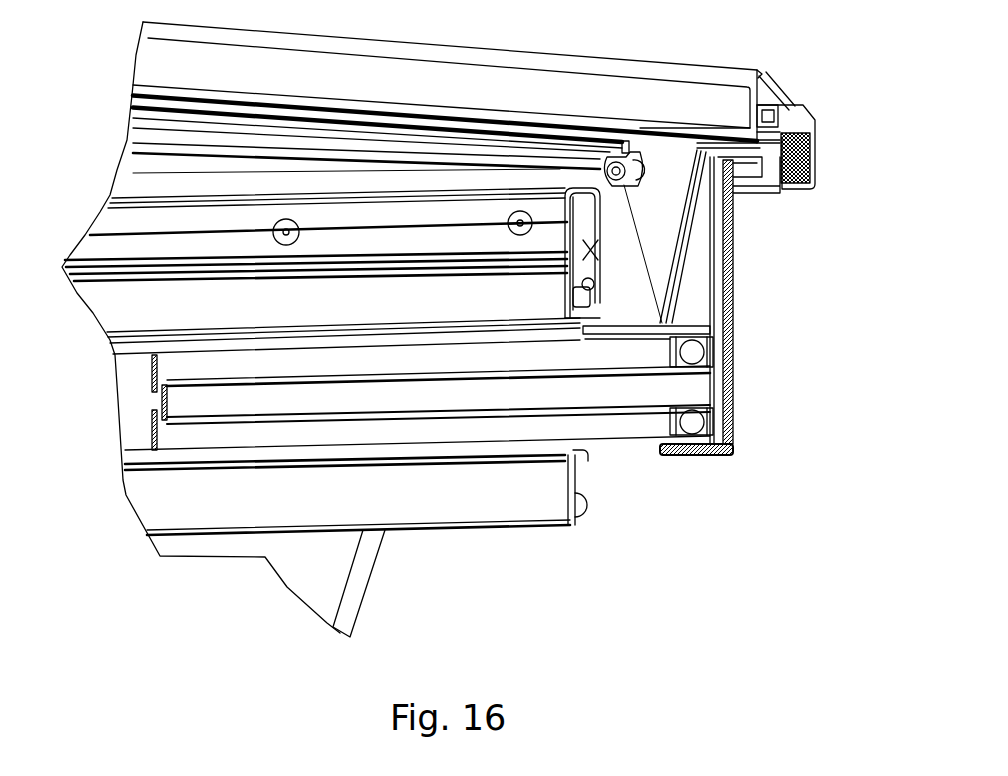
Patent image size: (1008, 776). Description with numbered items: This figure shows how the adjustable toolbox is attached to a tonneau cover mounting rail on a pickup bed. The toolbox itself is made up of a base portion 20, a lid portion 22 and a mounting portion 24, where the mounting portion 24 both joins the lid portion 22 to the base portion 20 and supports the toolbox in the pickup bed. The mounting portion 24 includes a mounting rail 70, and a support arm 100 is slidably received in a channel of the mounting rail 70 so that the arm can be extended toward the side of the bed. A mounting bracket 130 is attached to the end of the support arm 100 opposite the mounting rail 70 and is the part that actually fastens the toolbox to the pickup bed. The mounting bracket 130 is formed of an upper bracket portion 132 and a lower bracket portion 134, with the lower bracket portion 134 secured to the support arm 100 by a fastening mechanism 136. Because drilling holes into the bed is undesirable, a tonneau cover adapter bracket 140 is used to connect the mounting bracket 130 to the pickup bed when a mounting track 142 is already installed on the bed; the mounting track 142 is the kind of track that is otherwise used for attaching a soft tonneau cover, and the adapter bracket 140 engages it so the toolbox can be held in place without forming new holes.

The base portion 20 is at (289, 570).
The lid portion 22 is at (140, 194).
The mounting portion 24 is at (136, 379).
The mounting rail 70 is at (135, 432).
The support arm 100 is at (620, 443).
The mounting bracket 130 is at (717, 287).
The upper bracket portion 132 is at (730, 203).
The lower bracket portion 134 is at (708, 461).
The fastening mechanism 136 is at (700, 414).
The tonneau cover adapter bracket 140 is at (773, 193).
The mounting track 142 is at (779, 98).